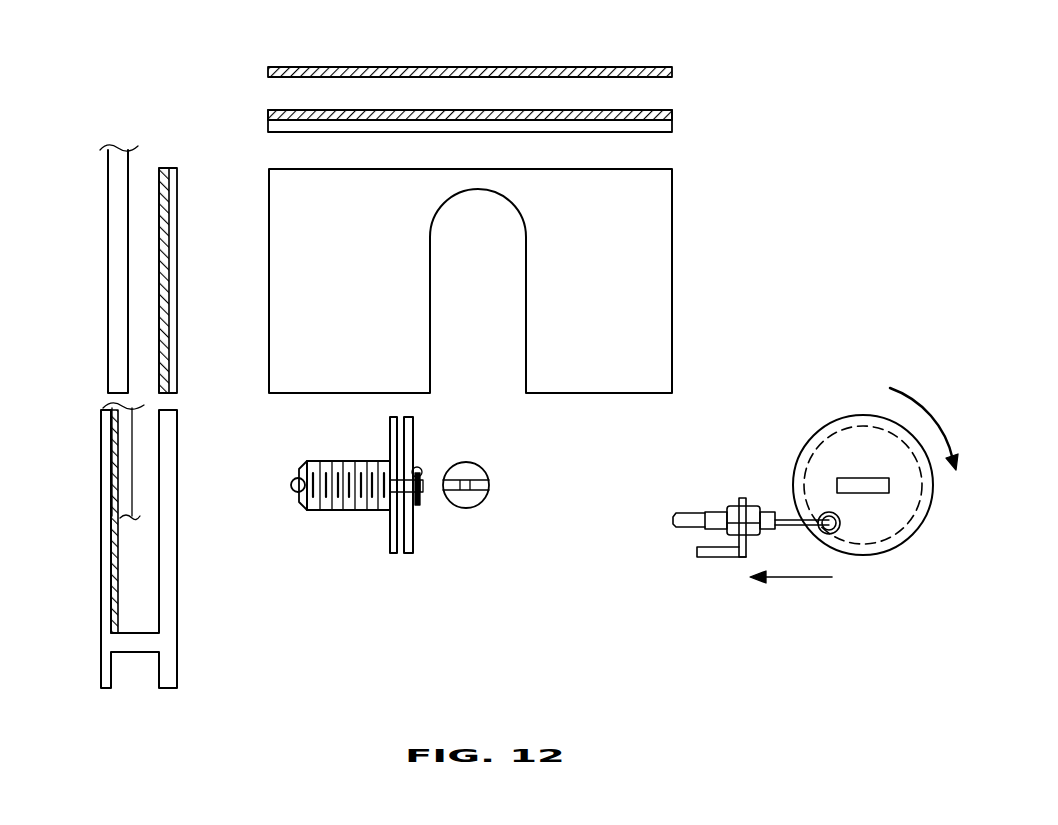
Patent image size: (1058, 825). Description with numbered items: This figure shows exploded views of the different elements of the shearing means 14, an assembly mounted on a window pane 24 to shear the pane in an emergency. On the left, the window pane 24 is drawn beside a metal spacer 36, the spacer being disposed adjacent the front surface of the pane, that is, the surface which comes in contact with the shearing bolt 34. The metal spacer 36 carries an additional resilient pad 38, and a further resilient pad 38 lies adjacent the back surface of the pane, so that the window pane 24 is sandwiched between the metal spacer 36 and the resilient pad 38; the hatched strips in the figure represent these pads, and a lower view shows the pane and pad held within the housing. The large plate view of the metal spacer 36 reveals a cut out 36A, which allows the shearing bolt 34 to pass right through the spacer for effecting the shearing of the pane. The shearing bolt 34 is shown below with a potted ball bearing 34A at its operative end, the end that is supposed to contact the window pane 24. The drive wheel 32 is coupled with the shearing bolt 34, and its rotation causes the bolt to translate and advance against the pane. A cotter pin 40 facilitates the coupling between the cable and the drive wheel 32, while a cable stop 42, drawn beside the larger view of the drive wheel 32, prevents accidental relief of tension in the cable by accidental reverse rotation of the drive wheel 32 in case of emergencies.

The shearing means 14 is at (803, 95).
The window pane 24 is at (108, 200).
The drive wheel 32 is at (478, 482).
The shearing bolt 34 is at (348, 510).
The potted ball bearing 34A is at (297, 492).
The metal spacer 36 is at (672, 128).
The cut out 36A is at (493, 232).
The resilient pad 38 is at (268, 72).
The cotter pin 40 is at (423, 470).
The cable stop 42 is at (755, 505).